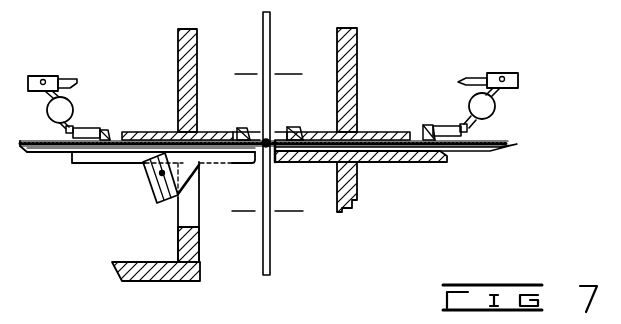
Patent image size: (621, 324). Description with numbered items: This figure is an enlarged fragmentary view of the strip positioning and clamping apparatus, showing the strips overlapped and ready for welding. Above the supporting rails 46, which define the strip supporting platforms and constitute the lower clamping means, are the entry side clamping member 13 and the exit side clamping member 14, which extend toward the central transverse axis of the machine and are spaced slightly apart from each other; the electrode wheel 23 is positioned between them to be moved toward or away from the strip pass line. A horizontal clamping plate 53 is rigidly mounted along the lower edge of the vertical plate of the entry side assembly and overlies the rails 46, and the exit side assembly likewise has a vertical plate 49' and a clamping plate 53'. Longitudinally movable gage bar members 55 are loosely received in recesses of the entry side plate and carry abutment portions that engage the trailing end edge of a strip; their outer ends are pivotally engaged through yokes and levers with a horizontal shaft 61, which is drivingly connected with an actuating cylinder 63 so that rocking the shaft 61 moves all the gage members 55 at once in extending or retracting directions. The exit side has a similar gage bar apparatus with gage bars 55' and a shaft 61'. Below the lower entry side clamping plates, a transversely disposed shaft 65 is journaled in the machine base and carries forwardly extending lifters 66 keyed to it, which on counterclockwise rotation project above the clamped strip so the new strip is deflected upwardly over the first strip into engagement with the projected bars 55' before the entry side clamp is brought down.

The entry side clamping member 13 is at (204, 62).
The exit side clamping member 14 is at (360, 53).
The electrode wheel 23 is at (282, 43).
The supporting rails 46 is at (128, 150).
The vertical plate 49' is at (364, 135).
The horizontal clamping plate 53 is at (191, 123).
The horizontal clamping plate 53' is at (342, 123).
The gage bar members 55 is at (175, 123).
The gage bar members 55' is at (361, 122).
The horizontal shaft 61 is at (76, 112).
The horizontal shaft 61' is at (480, 112).
The actuating cylinder 63 is at (69, 83).
The transversely disposed shaft 65 is at (158, 181).
The lifters 66 is at (242, 162).